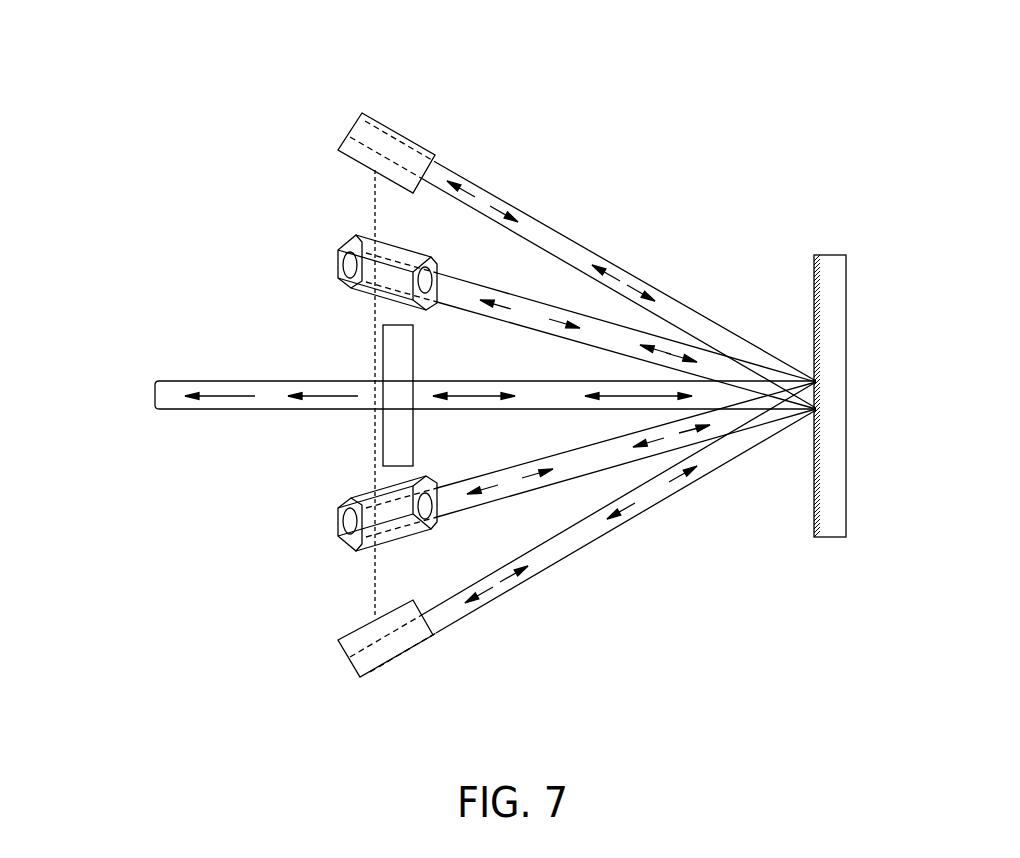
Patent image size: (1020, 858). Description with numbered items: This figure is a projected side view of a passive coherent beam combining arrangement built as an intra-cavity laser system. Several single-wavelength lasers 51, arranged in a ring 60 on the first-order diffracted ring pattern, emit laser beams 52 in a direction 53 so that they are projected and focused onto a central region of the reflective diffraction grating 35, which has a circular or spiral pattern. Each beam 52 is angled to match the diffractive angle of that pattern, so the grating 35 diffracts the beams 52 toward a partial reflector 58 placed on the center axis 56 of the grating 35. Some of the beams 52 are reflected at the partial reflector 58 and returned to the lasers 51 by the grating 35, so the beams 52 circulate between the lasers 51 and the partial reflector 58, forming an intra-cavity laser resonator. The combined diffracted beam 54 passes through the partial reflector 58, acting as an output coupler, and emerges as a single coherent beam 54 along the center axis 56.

The reflective diffraction grating 35 is at (833, 273).
The laser 51 is at (363, 140).
The laser beam 52 is at (528, 226).
The direction of emitted beams 53 is at (592, 267).
The diffracted beam 54 is at (175, 388).
The center axis 56 is at (303, 397).
The partial reflector 58 is at (393, 350).
The ring 60 is at (377, 203).